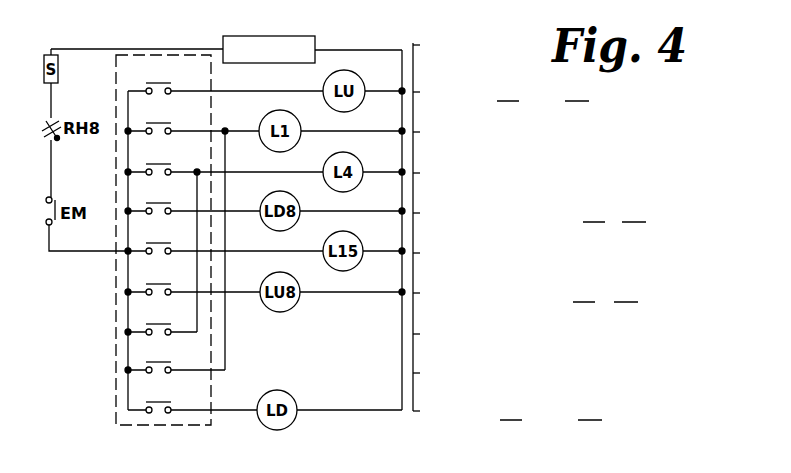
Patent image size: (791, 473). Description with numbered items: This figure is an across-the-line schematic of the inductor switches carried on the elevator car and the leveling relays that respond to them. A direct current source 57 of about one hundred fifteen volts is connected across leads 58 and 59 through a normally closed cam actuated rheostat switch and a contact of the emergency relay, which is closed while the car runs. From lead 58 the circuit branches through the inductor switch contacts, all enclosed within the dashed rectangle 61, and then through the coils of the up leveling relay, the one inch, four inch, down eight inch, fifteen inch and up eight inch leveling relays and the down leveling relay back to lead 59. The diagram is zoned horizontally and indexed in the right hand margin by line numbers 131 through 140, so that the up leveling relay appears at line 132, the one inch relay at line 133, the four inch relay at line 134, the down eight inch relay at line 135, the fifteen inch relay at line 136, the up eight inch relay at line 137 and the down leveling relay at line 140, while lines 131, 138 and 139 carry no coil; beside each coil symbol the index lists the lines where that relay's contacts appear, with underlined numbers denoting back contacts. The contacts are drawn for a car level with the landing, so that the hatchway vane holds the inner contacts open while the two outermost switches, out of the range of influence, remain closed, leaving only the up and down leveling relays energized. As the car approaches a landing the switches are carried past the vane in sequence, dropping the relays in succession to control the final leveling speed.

The direct current source 57 is at (315, 37).
The lead 58 is at (119, 188).
The lead 59 is at (402, 78).
The dashed rectangle 61 is at (213, 79).
The line 131 is at (434, 45).
The line 132 is at (553, 92).
The line 133 is at (488, 132).
The line 134 is at (550, 173).
The line 135 is at (535, 213).
The line 136 is at (474, 253).
The line 137 is at (530, 293).
The line 138 is at (434, 334).
The line 139 is at (434, 373).
The line 140 is at (562, 411).